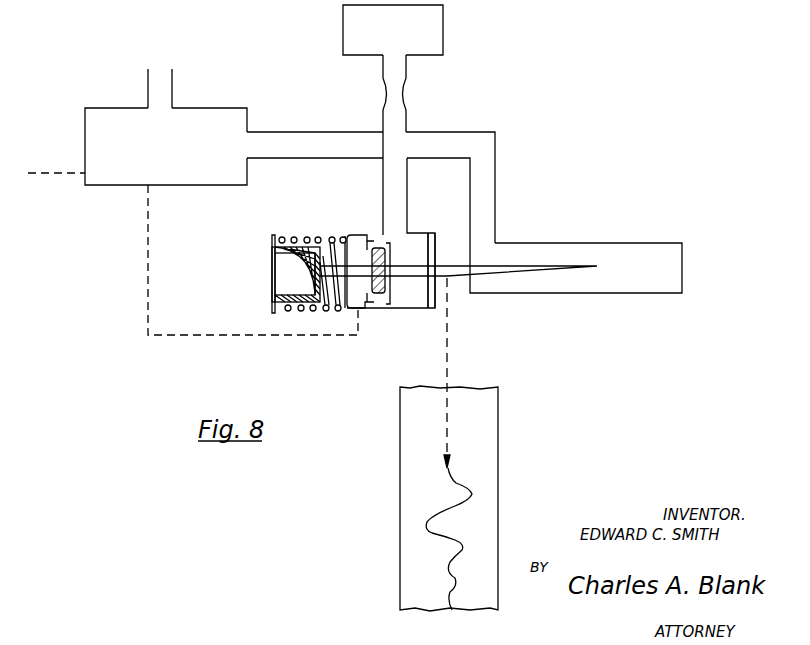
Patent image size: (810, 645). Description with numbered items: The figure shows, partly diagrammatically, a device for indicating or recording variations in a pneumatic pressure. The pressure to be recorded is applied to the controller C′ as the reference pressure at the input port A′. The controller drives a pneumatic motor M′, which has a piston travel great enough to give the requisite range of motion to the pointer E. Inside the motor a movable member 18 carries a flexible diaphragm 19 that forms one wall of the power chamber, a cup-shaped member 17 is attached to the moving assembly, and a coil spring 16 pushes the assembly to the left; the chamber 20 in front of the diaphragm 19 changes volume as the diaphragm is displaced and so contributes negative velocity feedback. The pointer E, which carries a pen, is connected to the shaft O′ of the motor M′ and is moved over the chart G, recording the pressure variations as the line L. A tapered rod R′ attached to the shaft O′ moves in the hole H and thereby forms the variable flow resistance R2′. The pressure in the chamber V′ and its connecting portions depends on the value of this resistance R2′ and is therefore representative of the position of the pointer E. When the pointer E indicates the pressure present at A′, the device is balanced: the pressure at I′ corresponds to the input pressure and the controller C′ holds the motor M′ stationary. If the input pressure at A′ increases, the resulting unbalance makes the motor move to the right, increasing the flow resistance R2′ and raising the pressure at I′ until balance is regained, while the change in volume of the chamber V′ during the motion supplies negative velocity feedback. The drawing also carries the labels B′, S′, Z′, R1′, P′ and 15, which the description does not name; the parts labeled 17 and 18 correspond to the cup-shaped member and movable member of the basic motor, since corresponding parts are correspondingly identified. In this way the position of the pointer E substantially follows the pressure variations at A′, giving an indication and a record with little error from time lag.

The input port A′ is at (148, 89).
The burner or heater B′ is at (393, 30).
The controller C′ is at (166, 146).
The supply connection S′ is at (56, 161).
The control linkage Z′ is at (148, 188).
The connecting pressure point I′ is at (252, 138).
The first restriction R1′ is at (400, 95).
The motor M′ is at (319, 249).
The shaft O′ is at (358, 270).
The flexible diaphragm 19 is at (370, 240).
The chamber V′ is at (413, 245).
The chamber 20 is at (421, 220).
The cup-shaped member 17 is at (272, 255).
The coil spring 16 is at (286, 312).
The valve disc P′ is at (372, 300).
The movable member 18 is at (348, 307).
The partition wall 15 is at (431, 310).
The tapered rod R′ is at (448, 265).
The hole H is at (478, 262).
The variable flow resistance R2′ is at (468, 280).
The pointer E is at (459, 373).
The chart G is at (449, 498).
The line L is at (468, 546).